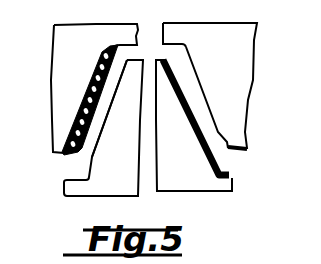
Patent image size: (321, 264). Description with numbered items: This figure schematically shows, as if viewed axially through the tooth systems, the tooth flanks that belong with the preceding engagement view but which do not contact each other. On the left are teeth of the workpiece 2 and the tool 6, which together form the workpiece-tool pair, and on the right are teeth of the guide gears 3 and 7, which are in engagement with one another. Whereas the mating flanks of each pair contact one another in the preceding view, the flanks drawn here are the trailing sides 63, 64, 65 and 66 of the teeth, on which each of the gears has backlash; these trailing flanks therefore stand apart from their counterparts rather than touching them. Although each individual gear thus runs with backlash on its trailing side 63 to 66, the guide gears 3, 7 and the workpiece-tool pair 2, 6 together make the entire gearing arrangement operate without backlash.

The workpiece 2 is at (88, 189).
The guide gear 3 is at (192, 190).
The tool 6 is at (61, 50).
The guide gear 7 is at (255, 38).
The trailing side 63 is at (90, 97).
The trailing side 64 is at (92, 158).
The trailing side 65 is at (208, 107).
The trailing side 66 is at (212, 147).